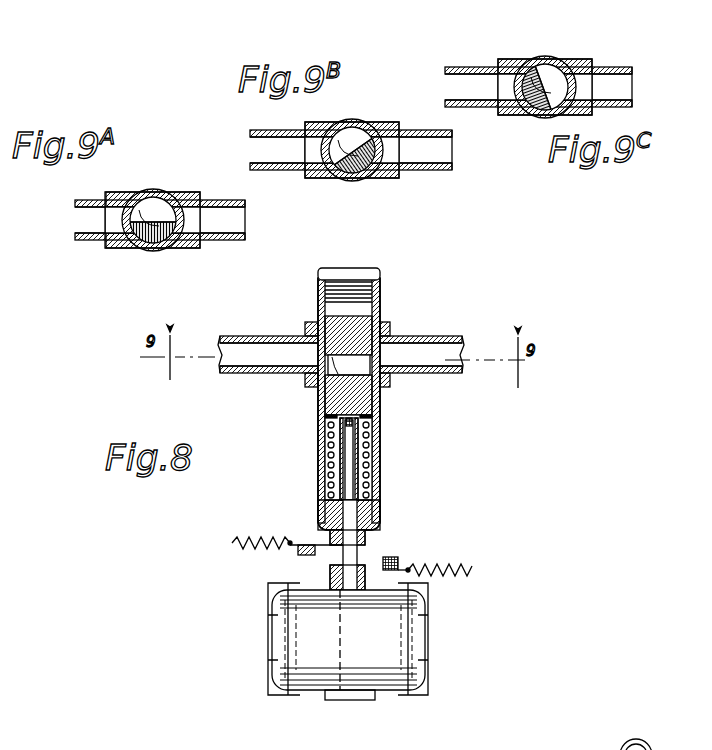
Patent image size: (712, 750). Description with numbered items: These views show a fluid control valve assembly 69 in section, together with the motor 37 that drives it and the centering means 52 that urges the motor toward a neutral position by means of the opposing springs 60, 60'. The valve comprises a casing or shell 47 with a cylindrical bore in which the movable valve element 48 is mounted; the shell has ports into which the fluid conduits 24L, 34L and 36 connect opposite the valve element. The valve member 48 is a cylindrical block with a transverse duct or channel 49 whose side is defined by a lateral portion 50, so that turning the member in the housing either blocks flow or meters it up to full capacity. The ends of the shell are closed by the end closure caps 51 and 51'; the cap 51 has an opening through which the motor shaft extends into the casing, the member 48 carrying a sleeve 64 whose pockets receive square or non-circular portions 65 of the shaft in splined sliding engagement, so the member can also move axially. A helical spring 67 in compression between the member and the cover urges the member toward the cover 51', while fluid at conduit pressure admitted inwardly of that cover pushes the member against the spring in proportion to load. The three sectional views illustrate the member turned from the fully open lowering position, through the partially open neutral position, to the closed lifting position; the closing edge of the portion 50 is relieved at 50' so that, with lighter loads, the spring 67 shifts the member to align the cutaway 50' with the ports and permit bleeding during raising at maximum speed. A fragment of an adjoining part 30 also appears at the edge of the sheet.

In FIG. 9A, the fluid conduit 24L is at (78, 217).
In FIG. 9C, the fluid conduit 24L is at (447, 82).
In FIG. 8, the fluid conduit 24L is at (232, 336).
In FIG. 9B, the left pipe section 34L is at (258, 148).
In FIG. 9A, the fluid conduit 36 is at (225, 220).
In FIG. 9B, the fluid conduit 36 is at (440, 156).
In FIG. 9C, the fluid conduit 36 is at (620, 82).
In FIG. 8, the fluid conduit 36 is at (444, 337).
In FIG. 9A, the casing or shell 47 is at (140, 248).
In FIG. 9B, the casing or shell 47 is at (350, 182).
In FIG. 9C, the casing or shell 47 is at (545, 54).
In FIG. 8, the casing or shell 47 is at (380, 485).
In FIG. 9A, the movable valve element 48 is at (168, 200).
In FIG. 9B, the movable valve element 48 is at (376, 136).
In FIG. 9C, the movable valve element 48 is at (577, 66).
In FIG. 8, the movable valve element 48 is at (384, 322).
In FIG. 8, the transverse duct or channel 49 is at (349, 365).
In FIG. 9A, the lateral portion 50 is at (157, 250).
In FIG. 9B, the lateral portion 50 is at (340, 171).
In FIG. 9C, the lateral portion 50 is at (528, 103).
In FIG. 9A, the cutaway portion 50' is at (153, 220).
In FIG. 9B, the cutaway portion 50' is at (352, 150).
In FIG. 9C, the cutaway portion 50' is at (545, 87).
In FIG. 8, the cutaway portion 50' is at (324, 395).
In FIG. 8, the end closure cap 51 is at (380, 545).
In FIG. 8, the end closure cap 51' is at (363, 262).
In FIG. 8, the centering means 52 is at (318, 564).
In FIG. 8, the spring 60 is at (262, 530).
In FIG. 8, the spring 60' is at (432, 556).
In FIG. 8, the sleeve 64 is at (372, 464).
In FIG. 8, the non-circular shaft portion 65 is at (345, 470).
In FIG. 8, the helical spring 67 is at (380, 444).
In FIG. 9A, the valve assembly 69 is at (192, 250).
In FIG. 9B, the valve assembly 69 is at (394, 183).
In FIG. 9C, the valve assembly 69 is at (508, 54).
In FIG. 8, the valve assembly 69 is at (398, 406).
In FIG. 8, the motor 37 is at (368, 633).
In FIG. 8, the housing 30 is at (636, 739).